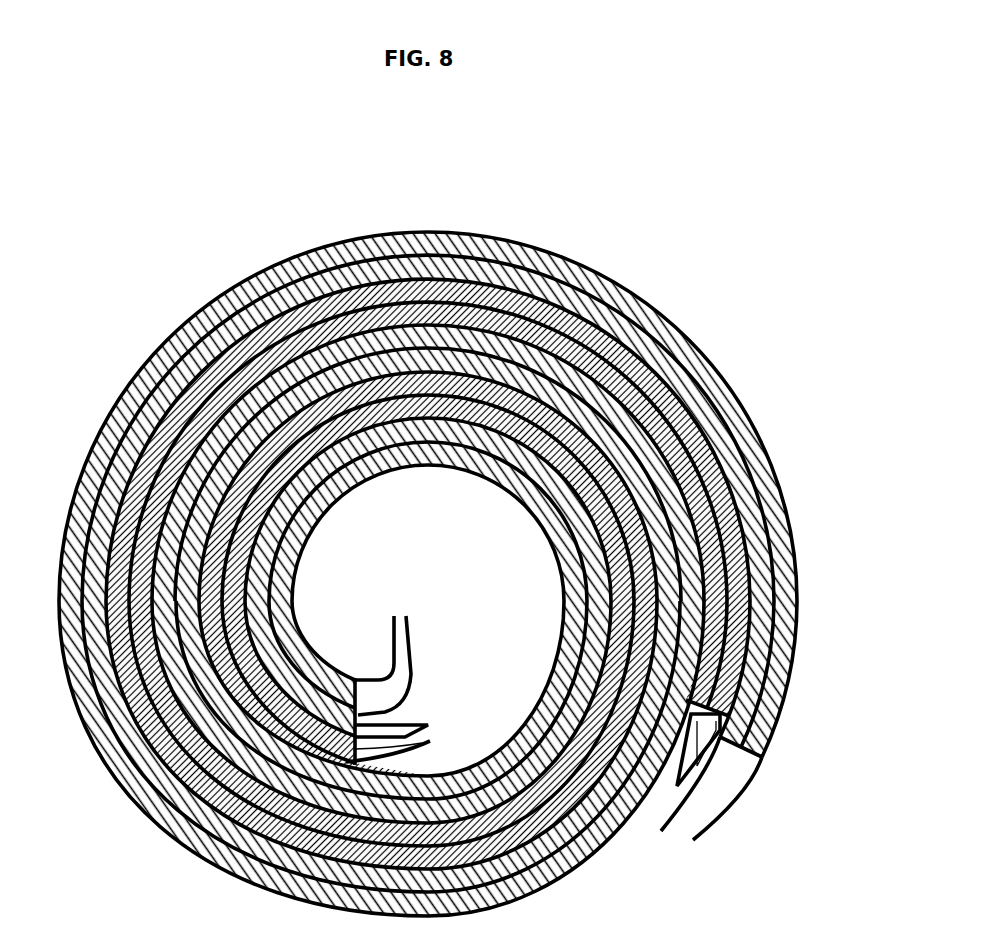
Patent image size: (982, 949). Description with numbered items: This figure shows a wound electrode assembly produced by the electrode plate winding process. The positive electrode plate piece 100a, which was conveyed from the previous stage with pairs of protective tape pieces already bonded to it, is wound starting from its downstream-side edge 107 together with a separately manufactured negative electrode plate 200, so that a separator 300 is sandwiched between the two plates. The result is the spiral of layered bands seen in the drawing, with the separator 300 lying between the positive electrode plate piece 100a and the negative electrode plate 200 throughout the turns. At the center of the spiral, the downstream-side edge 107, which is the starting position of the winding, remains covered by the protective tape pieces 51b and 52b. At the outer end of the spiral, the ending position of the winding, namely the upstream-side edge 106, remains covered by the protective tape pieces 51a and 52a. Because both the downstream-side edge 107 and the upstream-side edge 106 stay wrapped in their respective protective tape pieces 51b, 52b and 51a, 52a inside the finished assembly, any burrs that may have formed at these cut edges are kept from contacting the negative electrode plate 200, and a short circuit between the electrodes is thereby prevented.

The positive electrode plate piece 100a is at (730, 538).
The negative electrode plate 200 is at (747, 443).
The separator 300 is at (695, 350).
The protective tape piece 51a is at (690, 730).
The protective tape piece 51b is at (400, 706).
The protective tape piece 52a is at (712, 764).
The protective tape piece 52b is at (395, 748).
The upstream-side edge 106 is at (692, 757).
The downstream-side edge 107 is at (385, 722).